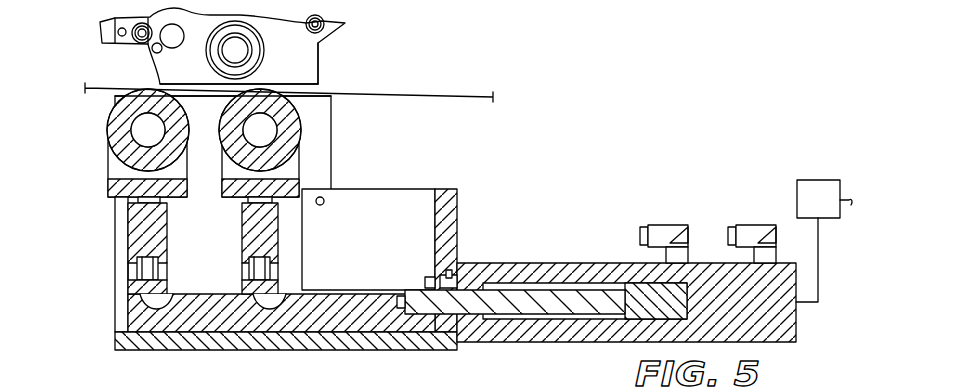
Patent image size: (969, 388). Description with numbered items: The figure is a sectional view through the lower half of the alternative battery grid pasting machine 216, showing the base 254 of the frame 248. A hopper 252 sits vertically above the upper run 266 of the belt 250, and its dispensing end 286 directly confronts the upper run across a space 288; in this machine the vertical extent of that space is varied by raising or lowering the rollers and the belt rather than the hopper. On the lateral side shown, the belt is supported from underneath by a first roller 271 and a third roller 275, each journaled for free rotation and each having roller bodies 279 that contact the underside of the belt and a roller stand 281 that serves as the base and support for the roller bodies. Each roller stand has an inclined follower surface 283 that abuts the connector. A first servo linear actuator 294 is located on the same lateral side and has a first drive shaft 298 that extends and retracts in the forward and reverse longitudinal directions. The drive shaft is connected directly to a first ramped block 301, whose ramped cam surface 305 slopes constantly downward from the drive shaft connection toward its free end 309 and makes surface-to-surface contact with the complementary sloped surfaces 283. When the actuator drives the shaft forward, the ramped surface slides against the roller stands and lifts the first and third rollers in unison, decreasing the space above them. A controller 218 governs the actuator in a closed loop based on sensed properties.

The battery grid pasting machine 216 is at (75, 107).
The controller 218 is at (821, 179).
The frame 248 is at (116, 245).
The belt 250 is at (394, 92).
The hopper 252 is at (108, 34).
The base 254 is at (116, 280).
The upper run 266 is at (138, 90).
The first roller 271 is at (305, 107).
The third roller 275 is at (104, 126).
The roller bodies 279 is at (125, 148).
The roller stand 281 is at (168, 231).
The surface 283 is at (168, 308).
The dispensing end 286 is at (319, 87).
The space 288 is at (291, 82).
The first servo linear actuator 294 is at (557, 262).
The first drive shaft 298 is at (415, 290).
The first ramped block 301 is at (288, 322).
The first ramped cam surface 305 is at (364, 292).
The free end 309 is at (130, 309).